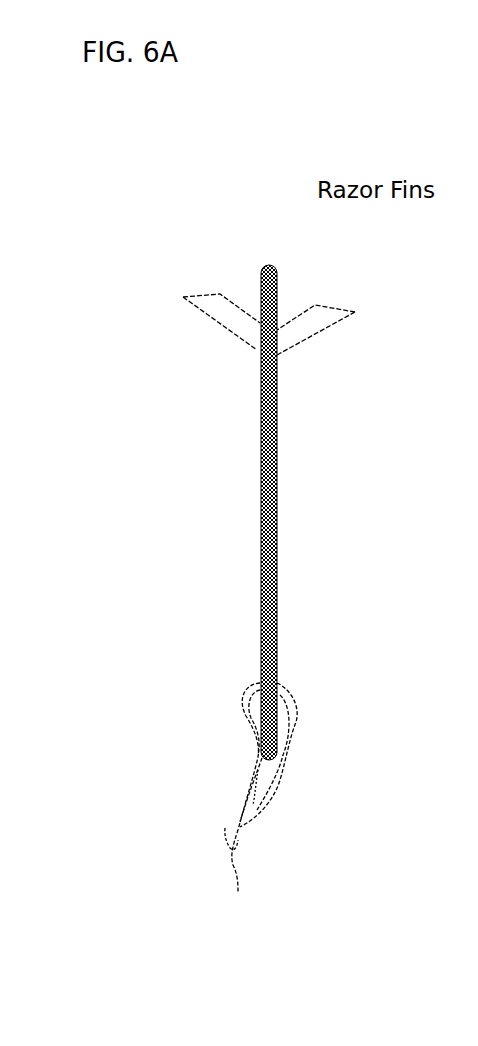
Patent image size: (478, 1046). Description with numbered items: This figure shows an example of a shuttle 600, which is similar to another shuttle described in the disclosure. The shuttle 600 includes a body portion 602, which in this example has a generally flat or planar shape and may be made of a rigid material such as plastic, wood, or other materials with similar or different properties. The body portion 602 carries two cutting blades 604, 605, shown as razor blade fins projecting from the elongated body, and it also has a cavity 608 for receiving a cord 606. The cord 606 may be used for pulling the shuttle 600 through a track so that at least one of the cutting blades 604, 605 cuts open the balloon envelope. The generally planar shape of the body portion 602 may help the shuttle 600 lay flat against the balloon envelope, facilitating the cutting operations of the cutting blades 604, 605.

The shuttle 600 is at (443, 43).
The body portion 602 is at (262, 555).
The cutting blade 604 is at (205, 293).
The cutting blade 605 is at (323, 305).
The cord 606 is at (290, 732).
The cavity 608 is at (260, 683).